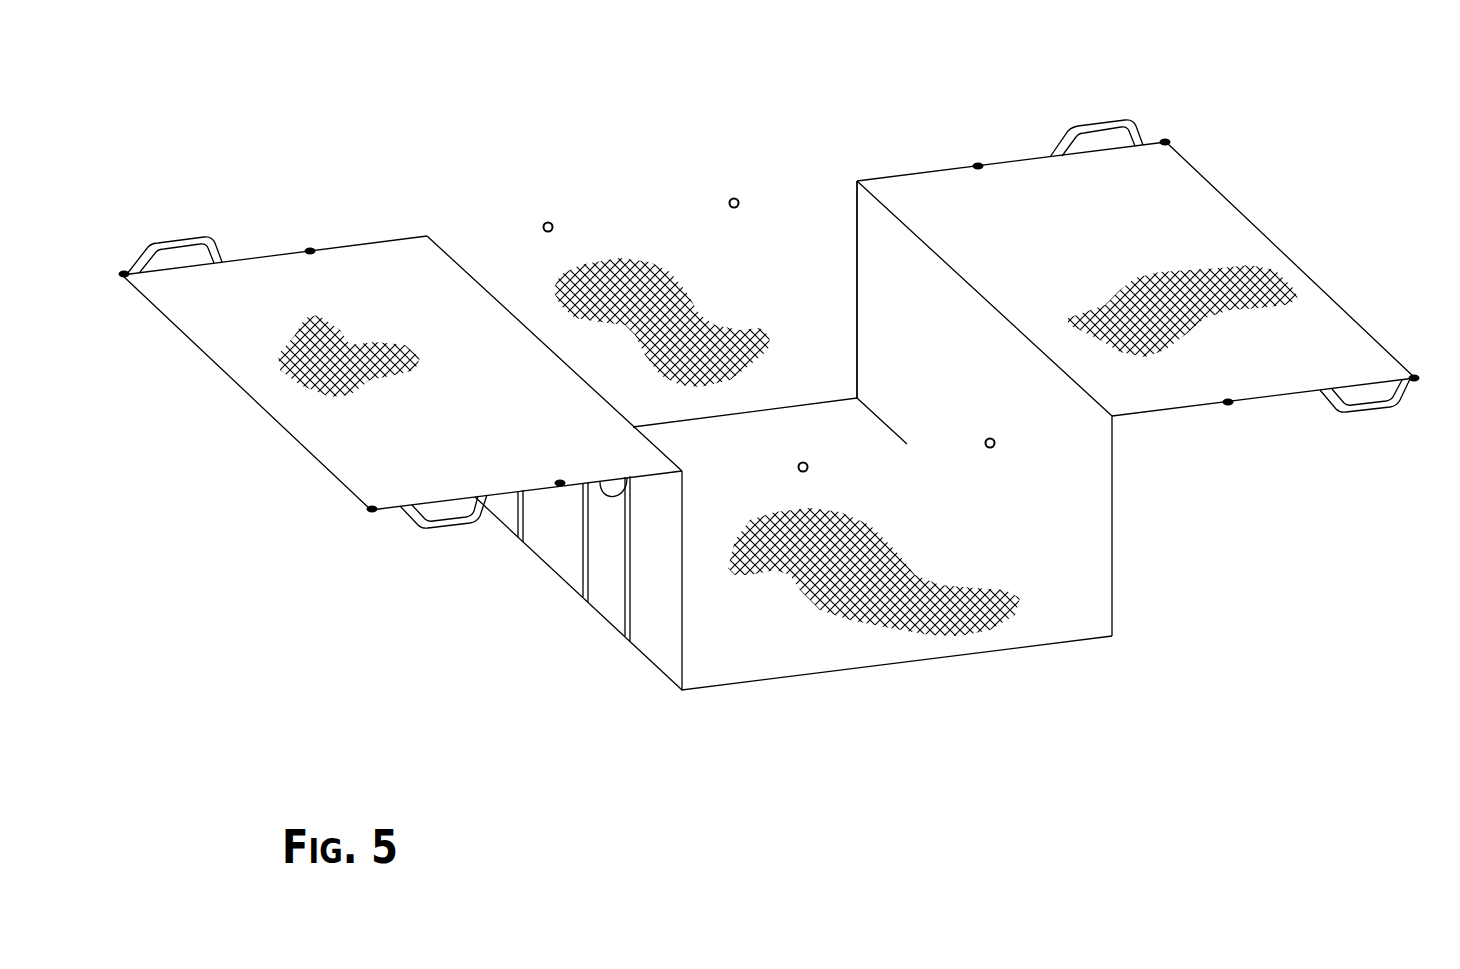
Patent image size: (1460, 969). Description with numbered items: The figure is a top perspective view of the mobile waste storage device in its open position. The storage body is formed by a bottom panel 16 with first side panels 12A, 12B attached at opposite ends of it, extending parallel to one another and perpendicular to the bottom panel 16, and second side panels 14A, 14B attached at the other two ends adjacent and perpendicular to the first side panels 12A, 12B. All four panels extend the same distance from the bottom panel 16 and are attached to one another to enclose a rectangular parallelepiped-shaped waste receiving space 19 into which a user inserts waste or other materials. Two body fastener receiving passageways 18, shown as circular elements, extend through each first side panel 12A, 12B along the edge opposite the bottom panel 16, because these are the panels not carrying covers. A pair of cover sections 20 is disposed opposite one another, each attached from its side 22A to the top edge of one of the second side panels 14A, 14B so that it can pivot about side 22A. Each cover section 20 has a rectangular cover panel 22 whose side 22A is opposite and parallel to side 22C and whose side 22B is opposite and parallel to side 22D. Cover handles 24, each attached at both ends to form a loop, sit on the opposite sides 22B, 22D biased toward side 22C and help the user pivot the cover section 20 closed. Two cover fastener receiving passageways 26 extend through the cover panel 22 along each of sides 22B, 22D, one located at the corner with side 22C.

The first side panel 12A is at (1038, 628).
The first side panel 12B is at (495, 198).
The second side panel 14A is at (656, 651).
The second side panel 14B is at (1140, 583).
The bottom panel 16 is at (779, 452).
The body fastener receiving passageway 18 is at (732, 198).
The waste receiving space 19 is at (802, 213).
The cover section 20 is at (237, 200).
The cover panel 22 is at (205, 342).
The side of cover panel 22A is at (550, 349).
The side of cover panel 22B is at (503, 495).
The side of cover panel 22C is at (284, 442).
The side of cover panel 22D is at (382, 235).
The cover handle 24 is at (165, 233).
The cover fastener receiving passageway 26 is at (122, 268).